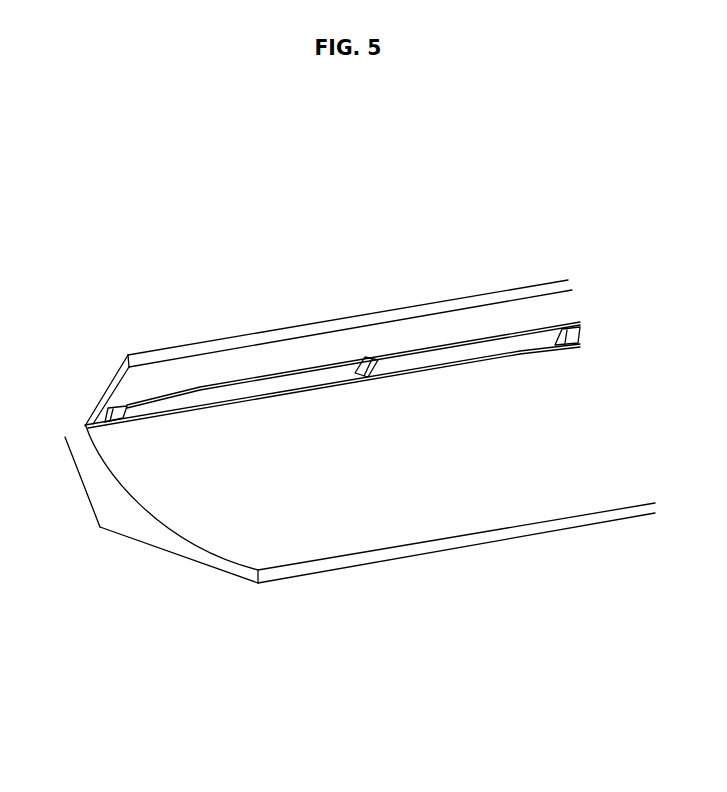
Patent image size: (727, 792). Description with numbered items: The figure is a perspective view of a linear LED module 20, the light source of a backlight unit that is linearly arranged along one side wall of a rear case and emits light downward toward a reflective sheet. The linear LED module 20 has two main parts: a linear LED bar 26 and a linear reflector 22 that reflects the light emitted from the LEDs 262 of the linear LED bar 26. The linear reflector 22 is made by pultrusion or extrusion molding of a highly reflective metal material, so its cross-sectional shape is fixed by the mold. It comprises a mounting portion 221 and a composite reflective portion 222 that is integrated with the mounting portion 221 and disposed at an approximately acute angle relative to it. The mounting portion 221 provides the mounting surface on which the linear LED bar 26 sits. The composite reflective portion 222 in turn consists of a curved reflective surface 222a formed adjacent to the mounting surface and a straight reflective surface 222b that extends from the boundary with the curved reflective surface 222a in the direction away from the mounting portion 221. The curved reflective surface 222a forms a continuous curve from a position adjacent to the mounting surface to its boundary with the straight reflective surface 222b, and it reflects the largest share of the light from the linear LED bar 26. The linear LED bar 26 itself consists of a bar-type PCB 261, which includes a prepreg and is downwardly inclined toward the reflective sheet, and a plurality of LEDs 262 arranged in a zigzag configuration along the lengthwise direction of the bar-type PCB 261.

The linear LED module 20 is at (605, 281).
The linear reflector 22 is at (108, 670).
The mounting portion 221 is at (87, 421).
The composite reflective portion 222 is at (148, 627).
The curved reflective surface 222a is at (114, 459).
The straight reflective surface 222b is at (268, 538).
The linear LED bar 26 is at (488, 115).
The bar-type PCB 261 is at (427, 357).
The LEDs 262 is at (370, 358).